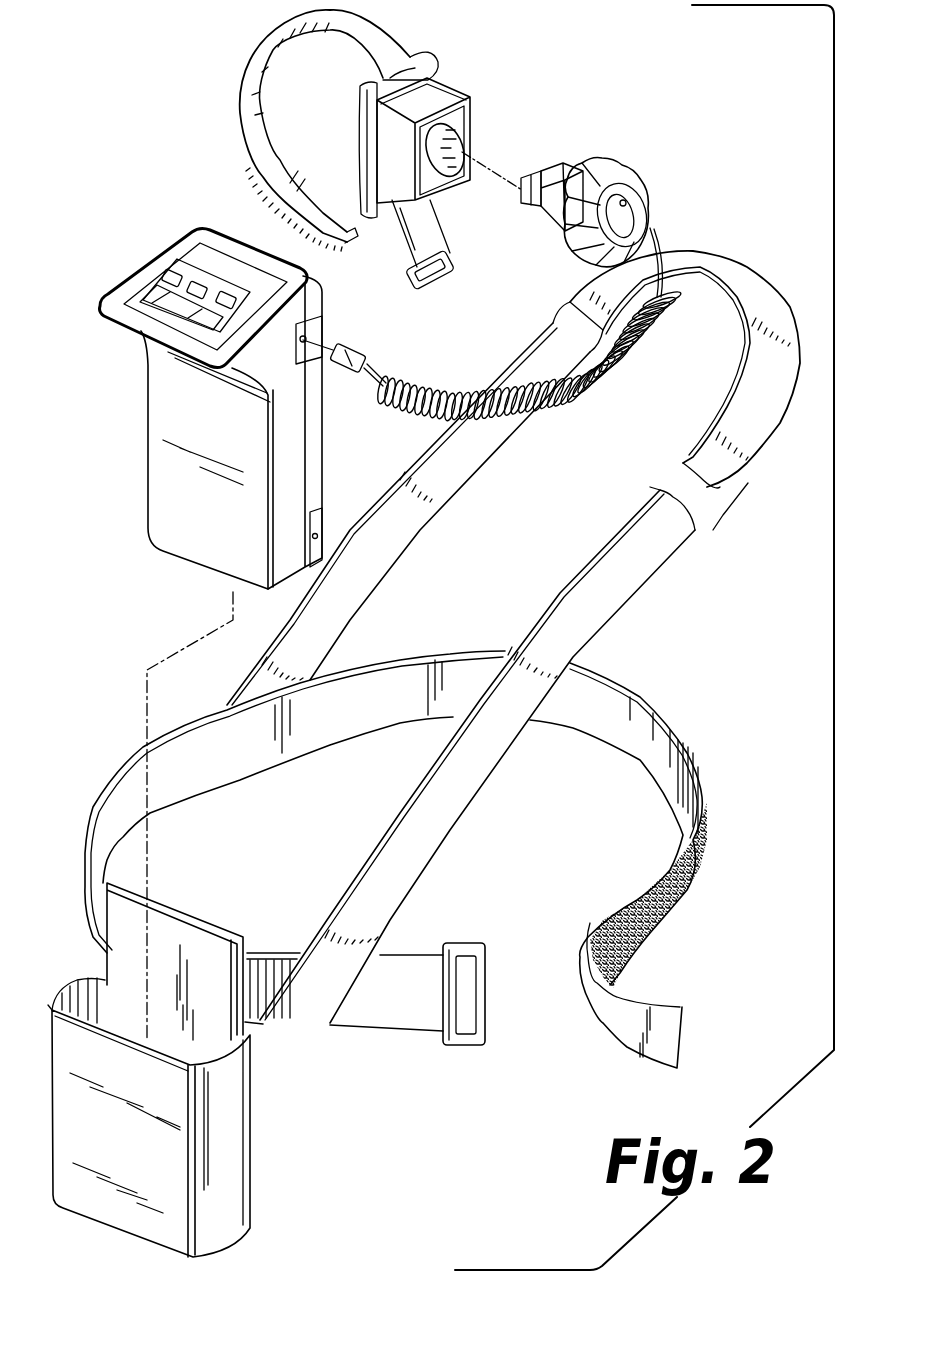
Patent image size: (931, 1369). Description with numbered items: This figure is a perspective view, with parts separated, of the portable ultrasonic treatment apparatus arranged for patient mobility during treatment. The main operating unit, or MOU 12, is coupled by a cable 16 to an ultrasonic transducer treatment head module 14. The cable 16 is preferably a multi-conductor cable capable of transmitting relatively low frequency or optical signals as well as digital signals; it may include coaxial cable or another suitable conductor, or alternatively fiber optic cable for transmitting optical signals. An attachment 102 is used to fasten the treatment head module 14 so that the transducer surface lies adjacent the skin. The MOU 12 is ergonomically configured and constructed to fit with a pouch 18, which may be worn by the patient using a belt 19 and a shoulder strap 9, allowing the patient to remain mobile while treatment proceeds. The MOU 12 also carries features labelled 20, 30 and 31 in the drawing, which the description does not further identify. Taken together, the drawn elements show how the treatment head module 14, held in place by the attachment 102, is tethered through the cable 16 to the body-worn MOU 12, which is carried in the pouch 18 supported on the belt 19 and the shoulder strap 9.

The attachment 102 is at (482, 80).
The ultrasonic transducer treatment head module 14 is at (660, 154).
The MOU 12 is at (245, 585).
The cable 16 is at (448, 397).
The display window 30 is at (153, 297).
The control buttons 31 is at (180, 273).
The housing 20 is at (167, 432).
The shoulder strap 9 is at (627, 583).
The belt 19 is at (110, 790).
The pouch 18 is at (257, 1120).